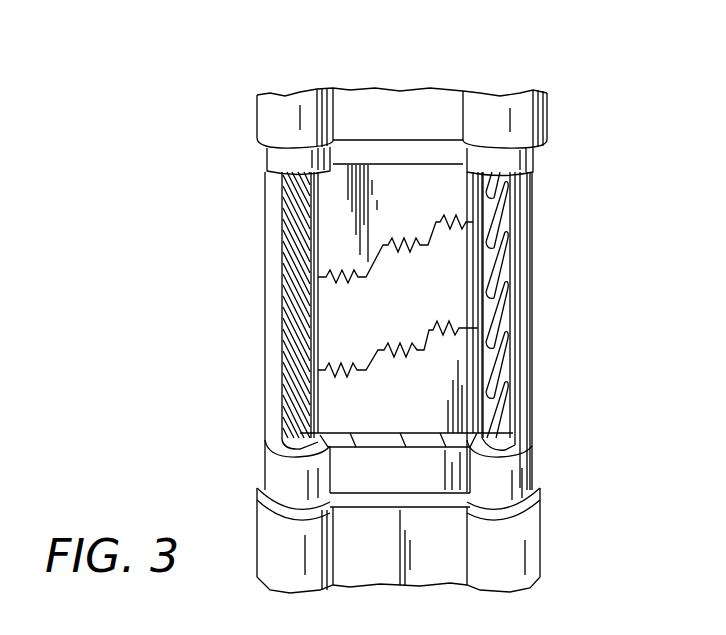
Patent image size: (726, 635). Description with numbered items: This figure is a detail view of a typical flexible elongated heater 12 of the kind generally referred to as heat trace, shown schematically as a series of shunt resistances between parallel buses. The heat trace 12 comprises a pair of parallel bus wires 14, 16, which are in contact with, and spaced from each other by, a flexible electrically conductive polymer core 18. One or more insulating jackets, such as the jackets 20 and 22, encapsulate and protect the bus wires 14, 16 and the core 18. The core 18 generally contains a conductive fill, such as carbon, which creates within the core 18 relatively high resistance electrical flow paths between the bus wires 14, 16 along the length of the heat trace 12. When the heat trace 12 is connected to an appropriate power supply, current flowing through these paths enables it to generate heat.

The flexible elongated heater 12 is at (553, 97).
The bus wire 14 is at (502, 213).
The bus wire 16 is at (300, 223).
The flexible electrically conductive polymer core 18 is at (463, 285).
The insulating jacket 20 is at (517, 468).
The insulating jacket 22 is at (532, 527).